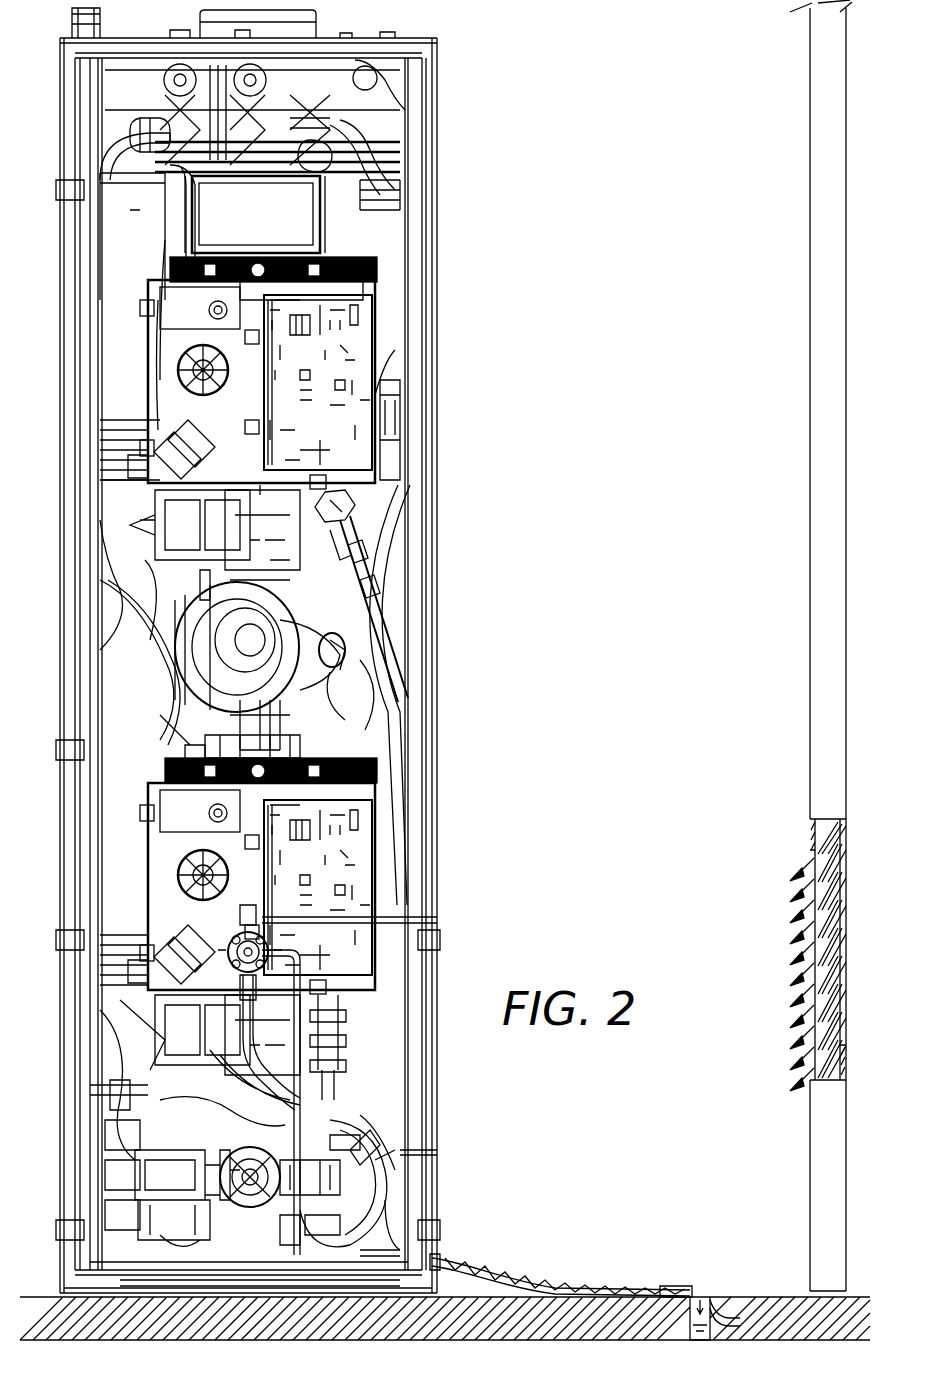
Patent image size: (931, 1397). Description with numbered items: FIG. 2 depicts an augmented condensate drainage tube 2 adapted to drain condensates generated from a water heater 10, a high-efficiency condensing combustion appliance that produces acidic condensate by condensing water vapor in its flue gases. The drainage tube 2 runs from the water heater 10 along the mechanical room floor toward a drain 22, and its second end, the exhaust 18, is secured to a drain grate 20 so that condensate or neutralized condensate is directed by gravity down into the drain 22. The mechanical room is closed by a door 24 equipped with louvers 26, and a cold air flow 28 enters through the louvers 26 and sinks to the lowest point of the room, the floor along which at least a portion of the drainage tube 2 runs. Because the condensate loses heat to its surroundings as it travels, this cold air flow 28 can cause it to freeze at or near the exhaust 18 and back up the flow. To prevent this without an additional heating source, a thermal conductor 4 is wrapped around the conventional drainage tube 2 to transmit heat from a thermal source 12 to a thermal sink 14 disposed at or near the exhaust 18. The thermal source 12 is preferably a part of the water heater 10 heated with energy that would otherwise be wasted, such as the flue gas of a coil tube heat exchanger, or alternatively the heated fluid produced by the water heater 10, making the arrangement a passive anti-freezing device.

The condensate drainage tube 2 is at (548, 1288).
The thermal conductor 4 is at (335, 1116).
The water heater 10 is at (433, 449).
The thermal source 12 is at (244, 938).
The thermal sink 14 is at (668, 1290).
The exhaust 18 is at (695, 1292).
The drain grate 20 is at (701, 1300).
The drain 22 is at (712, 1308).
The door 24 is at (810, 272).
The louvers 26 is at (840, 878).
The cold air flow 28 is at (812, 858).